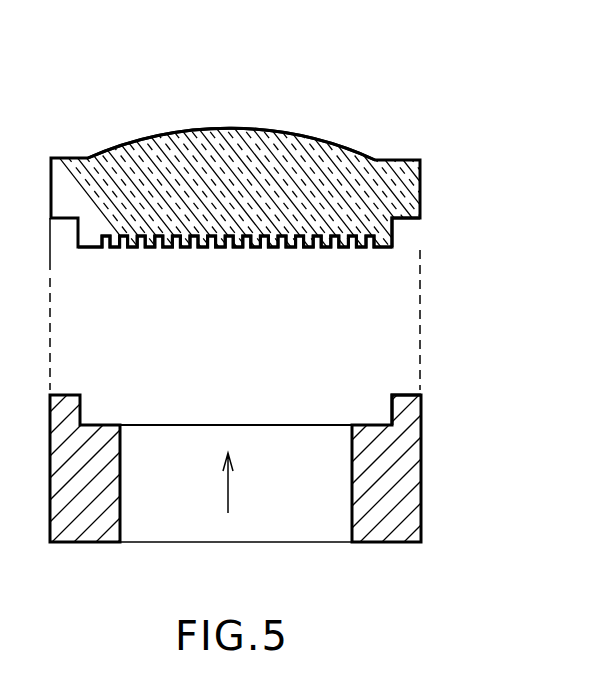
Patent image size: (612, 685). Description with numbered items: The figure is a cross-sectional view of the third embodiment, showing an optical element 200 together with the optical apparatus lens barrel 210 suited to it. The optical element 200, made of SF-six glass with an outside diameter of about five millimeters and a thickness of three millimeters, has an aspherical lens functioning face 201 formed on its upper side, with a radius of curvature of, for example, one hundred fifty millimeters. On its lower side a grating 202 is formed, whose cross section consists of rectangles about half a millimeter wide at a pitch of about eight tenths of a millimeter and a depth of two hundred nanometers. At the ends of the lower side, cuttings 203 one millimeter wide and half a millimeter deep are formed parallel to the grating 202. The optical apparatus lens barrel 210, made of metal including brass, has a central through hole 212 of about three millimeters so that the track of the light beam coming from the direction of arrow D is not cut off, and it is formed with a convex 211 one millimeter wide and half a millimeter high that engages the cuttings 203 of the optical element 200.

The optical element 200 is at (420, 192).
The lens functioning face 201 is at (290, 130).
The grating 202 is at (330, 248).
The cuttings 203 is at (404, 222).
The optical apparatus lens barrel 210 is at (420, 457).
The convex 211 is at (420, 398).
The through hole 212 is at (323, 514).
The arrow indicating light beam direction D is at (223, 497).